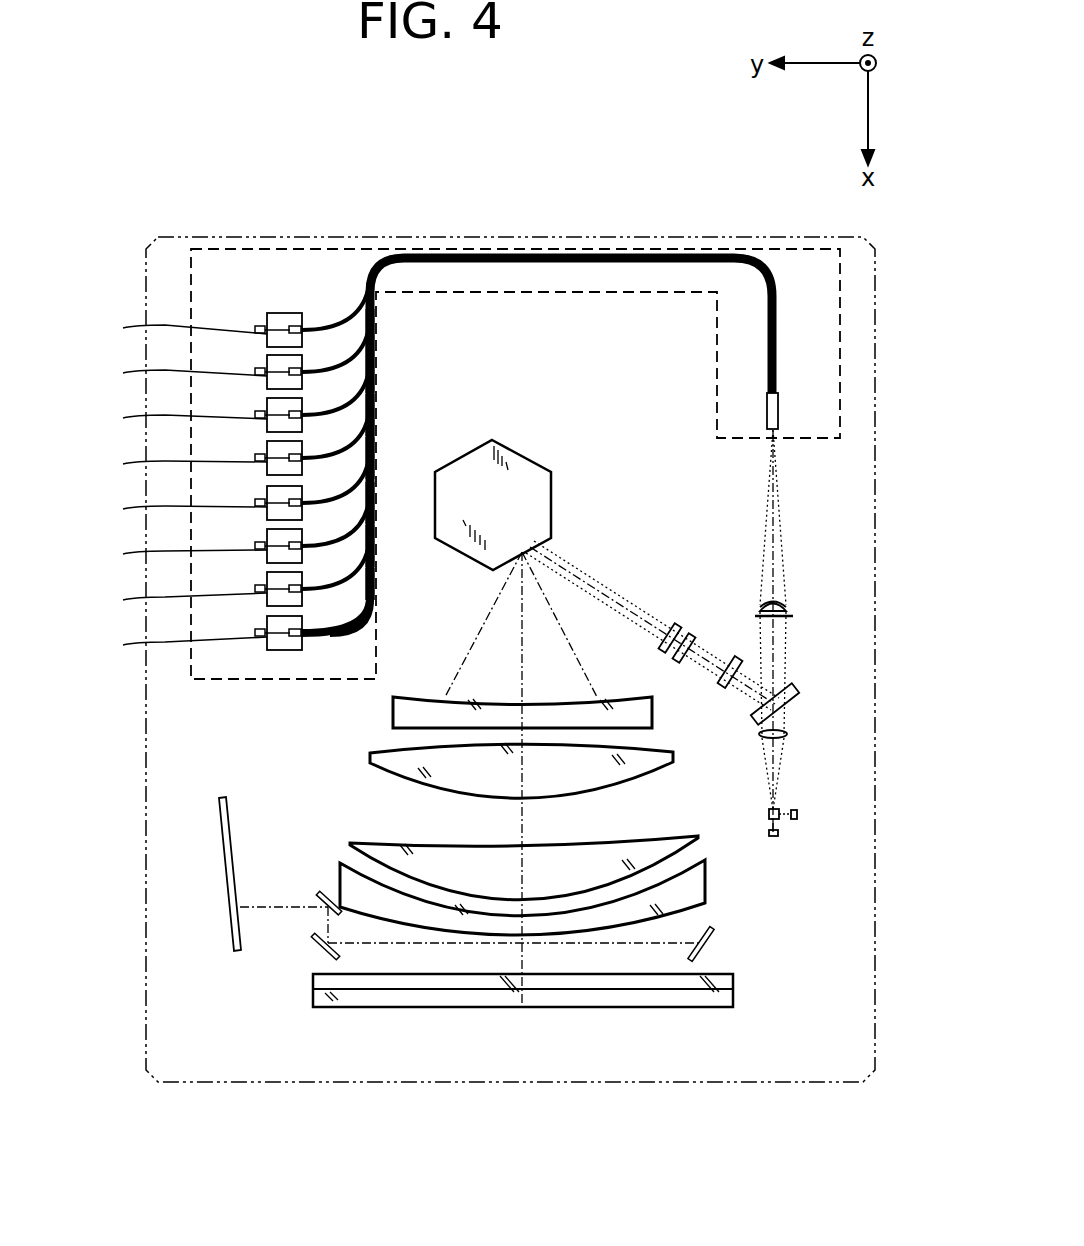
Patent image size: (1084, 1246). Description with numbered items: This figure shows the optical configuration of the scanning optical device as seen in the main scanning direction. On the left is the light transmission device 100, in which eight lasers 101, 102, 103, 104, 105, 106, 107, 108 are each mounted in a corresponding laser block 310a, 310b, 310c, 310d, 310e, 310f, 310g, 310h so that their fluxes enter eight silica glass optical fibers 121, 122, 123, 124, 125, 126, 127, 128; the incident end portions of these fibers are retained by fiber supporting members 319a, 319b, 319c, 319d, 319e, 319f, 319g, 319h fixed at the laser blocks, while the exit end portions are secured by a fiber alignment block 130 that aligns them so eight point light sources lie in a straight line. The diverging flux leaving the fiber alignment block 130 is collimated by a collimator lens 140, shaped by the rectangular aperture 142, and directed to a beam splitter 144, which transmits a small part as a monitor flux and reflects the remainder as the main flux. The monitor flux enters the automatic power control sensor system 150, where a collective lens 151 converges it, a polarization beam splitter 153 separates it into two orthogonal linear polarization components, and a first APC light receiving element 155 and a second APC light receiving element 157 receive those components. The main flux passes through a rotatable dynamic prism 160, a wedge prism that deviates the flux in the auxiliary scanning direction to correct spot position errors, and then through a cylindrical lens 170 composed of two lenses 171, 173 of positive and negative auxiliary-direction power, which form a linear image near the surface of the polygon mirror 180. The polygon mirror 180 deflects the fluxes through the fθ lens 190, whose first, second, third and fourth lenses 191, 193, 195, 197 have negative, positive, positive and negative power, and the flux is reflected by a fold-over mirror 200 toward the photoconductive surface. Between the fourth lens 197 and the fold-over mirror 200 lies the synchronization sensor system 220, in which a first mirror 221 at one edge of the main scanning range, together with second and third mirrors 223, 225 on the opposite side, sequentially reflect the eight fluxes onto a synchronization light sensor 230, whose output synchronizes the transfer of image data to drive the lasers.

The light transmission device 100 is at (628, 292).
The laser 101 is at (267, 639).
The laser 102 is at (267, 595).
The laser 103 is at (267, 552).
The laser 104 is at (267, 509).
The laser 105 is at (267, 464).
The laser 106 is at (267, 421).
The laser 107 is at (267, 378).
The laser 108 is at (267, 336).
The optical fiber 121 is at (373, 633).
The optical fiber 122 is at (373, 589).
The optical fiber 123 is at (373, 546).
The optical fiber 124 is at (373, 503).
The optical fiber 125 is at (373, 458).
The optical fiber 126 is at (373, 415).
The optical fiber 127 is at (373, 372).
The optical fiber 128 is at (373, 330).
The fiber alignment block 130 is at (779, 410).
The collimator lens 140 is at (788, 605).
The aperture 142 is at (795, 618).
The beam splitter 144 is at (790, 694).
The automatic power control (APC) sensor system 150 is at (846, 785).
The collective lens 151 is at (788, 734).
The polarization beam splitter 153 is at (781, 808).
The first APC light receiving element 155 is at (779, 836).
The second APC light receiving element 157 is at (798, 815).
The dynamic prism 160 is at (733, 685).
The cylindrical lens 170 is at (683, 592).
The lens 171 is at (688, 640).
The lens 173 is at (678, 626).
The polygon mirror 180 is at (512, 450).
The fθ lens 190 is at (457, 816).
The first lens 191 is at (390, 717).
The second lens 193 is at (373, 762).
The third lens 195 is at (357, 843).
The fourth lens 197 is at (340, 870).
The fold-over mirror 200 is at (324, 997).
The synchronization sensor system 220 is at (466, 962).
The first mirror 221 is at (649, 996).
The second mirror 223 is at (337, 958).
The third mirror 225 is at (340, 913).
The synchronization light sensor 230 is at (240, 932).
The laser block 310a is at (173, 628).
The laser block 310b is at (172, 583).
The laser block 310c is at (173, 537).
The laser block 310d is at (172, 492).
The laser block 310e is at (173, 447).
The laser block 310f is at (174, 402).
The laser block 310g is at (172, 358).
The laser block 310h is at (172, 314).
The fiber supporting member 319a is at (302, 633).
The fiber supporting member 319b is at (302, 589).
The fiber supporting member 319c is at (302, 546).
The fiber supporting member 319d is at (302, 503).
The fiber supporting member 319e is at (302, 458).
The fiber supporting member 319f is at (302, 415).
The fiber supporting member 319g is at (302, 372).
The fiber supporting member 319h is at (302, 330).